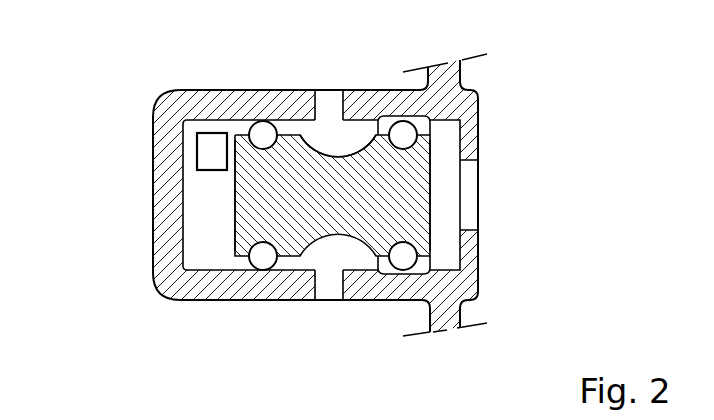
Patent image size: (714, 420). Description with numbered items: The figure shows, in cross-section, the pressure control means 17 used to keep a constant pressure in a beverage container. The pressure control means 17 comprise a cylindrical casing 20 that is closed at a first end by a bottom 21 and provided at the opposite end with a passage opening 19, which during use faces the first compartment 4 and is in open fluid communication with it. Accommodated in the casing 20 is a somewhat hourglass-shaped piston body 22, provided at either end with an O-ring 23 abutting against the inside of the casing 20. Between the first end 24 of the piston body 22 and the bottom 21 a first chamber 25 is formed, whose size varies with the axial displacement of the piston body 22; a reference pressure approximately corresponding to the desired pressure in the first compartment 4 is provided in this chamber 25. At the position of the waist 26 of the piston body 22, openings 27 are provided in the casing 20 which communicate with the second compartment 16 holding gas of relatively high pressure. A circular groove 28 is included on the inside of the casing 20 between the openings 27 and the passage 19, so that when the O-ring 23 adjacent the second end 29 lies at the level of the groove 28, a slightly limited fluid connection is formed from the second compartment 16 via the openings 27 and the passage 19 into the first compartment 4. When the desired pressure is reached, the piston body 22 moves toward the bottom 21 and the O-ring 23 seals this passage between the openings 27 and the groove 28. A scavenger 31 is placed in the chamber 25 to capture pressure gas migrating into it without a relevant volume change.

The first compartment 4 is at (582, 154).
The second compartment 16 is at (133, 147).
The pressure control means 17 is at (112, 197).
The passage opening 19 is at (467, 190).
The cylindrical casing 20 is at (245, 288).
The bottom 21 is at (168, 239).
The piston body 22 is at (305, 187).
The O-ring 23 is at (263, 135).
The first end of the piston body 24 is at (235, 238).
The first chamber 25 is at (195, 222).
The waist 26 is at (335, 198).
The openings 27 is at (336, 104).
The circular groove 28 is at (418, 121).
The second end of the piston body 29 is at (405, 220).
The scavenger 31 is at (210, 146).